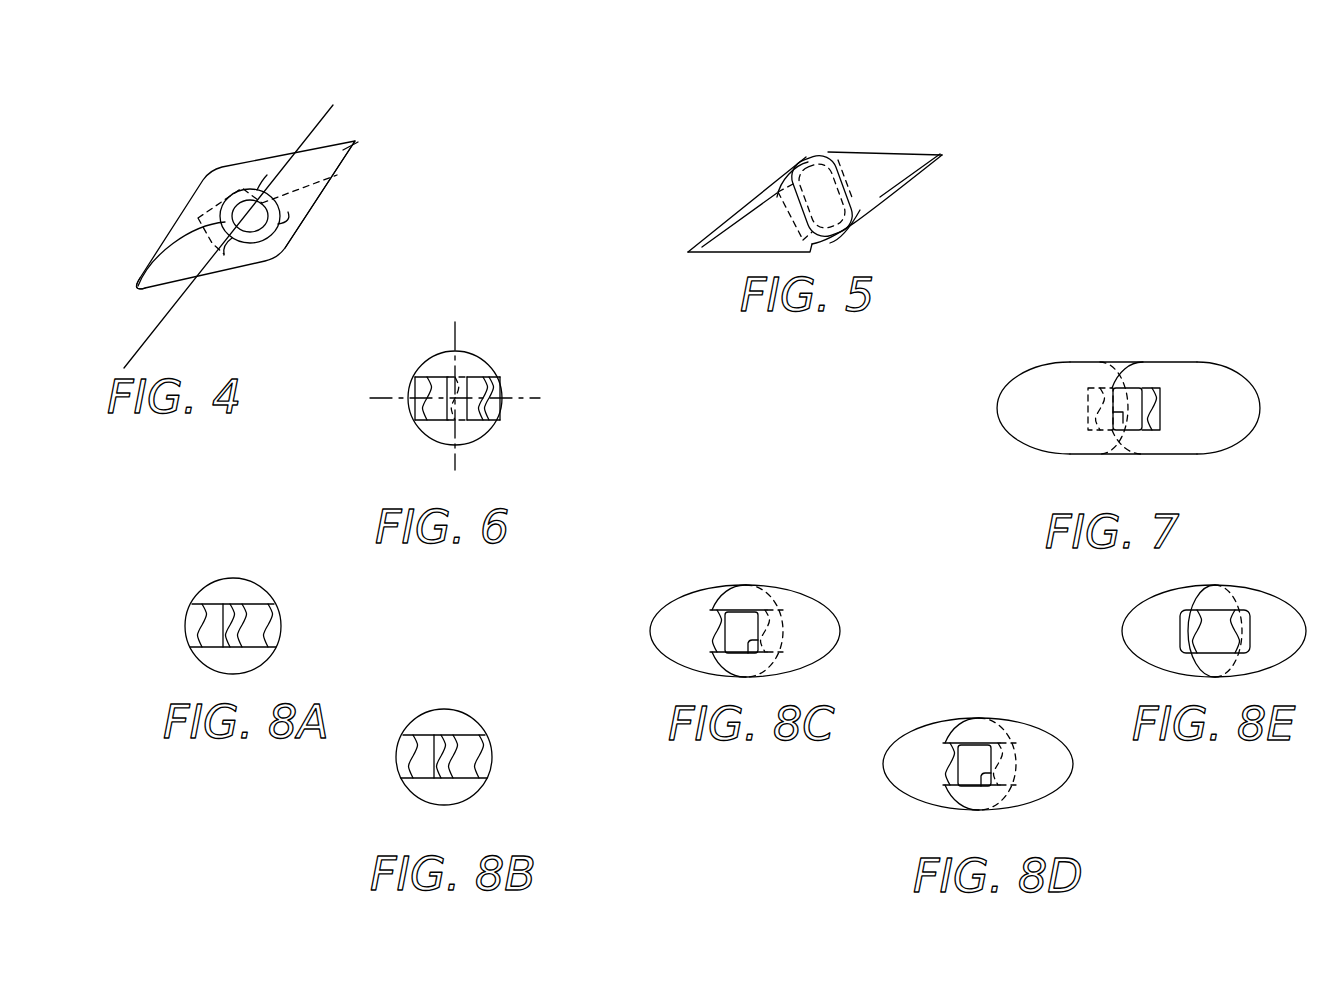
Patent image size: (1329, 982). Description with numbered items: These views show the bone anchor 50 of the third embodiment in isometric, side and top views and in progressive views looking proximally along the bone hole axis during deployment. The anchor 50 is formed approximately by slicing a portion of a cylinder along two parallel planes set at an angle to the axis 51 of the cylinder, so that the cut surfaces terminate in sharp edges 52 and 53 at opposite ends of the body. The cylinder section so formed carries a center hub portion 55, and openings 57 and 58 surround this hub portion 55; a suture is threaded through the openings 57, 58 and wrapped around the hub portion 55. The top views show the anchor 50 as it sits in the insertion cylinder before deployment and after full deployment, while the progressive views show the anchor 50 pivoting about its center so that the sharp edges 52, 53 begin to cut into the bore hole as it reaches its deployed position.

In FIG. 4, the anchor 50 is at (357, 142).
In FIG. 4, the axis 51 is at (333, 105).
In FIG. 4, the sharp edge 52 is at (135, 292).
In FIG. 5, the sharp edge 52 is at (690, 250).
In FIG. 7, the sharp edge 52 is at (1005, 408).
In FIG. 4, the sharp edge 53 is at (358, 143).
In FIG. 5, the sharp edge 53 is at (932, 153).
In FIG. 7, the sharp edge 53 is at (1245, 398).
In FIG. 4, the center hub portion 55 is at (237, 200).
In FIG. 5, the center hub portion 55 is at (808, 162).
In FIG. 7, the center hub portion 55 is at (1128, 420).
In FIG. 5, the opening 57 is at (787, 190).
In FIG. 6, the opening 57 is at (417, 408).
In FIG. 7, the opening 57 is at (1097, 397).
In FIG. 8E, the opening 57 is at (1188, 620).
In FIG. 5, the opening 58 is at (818, 155).
In FIG. 6, the opening 58 is at (497, 387).
In FIG. 7, the opening 58 is at (1155, 397).
In FIG. 8E, the opening 58 is at (1242, 647).